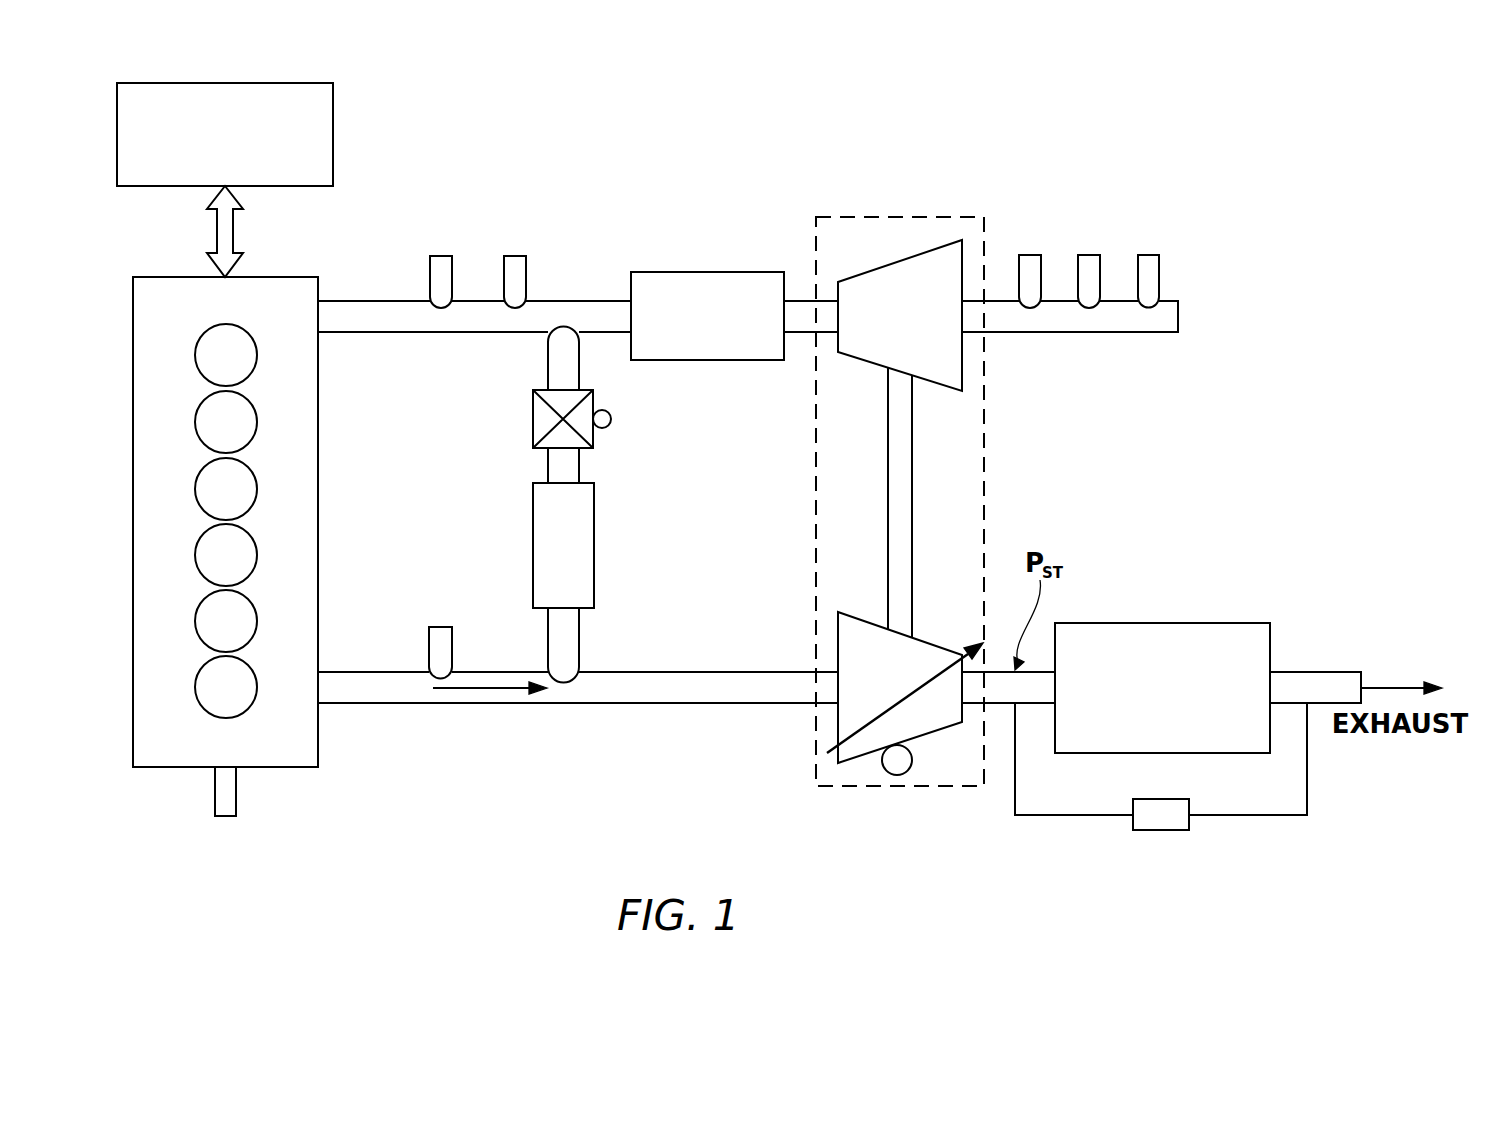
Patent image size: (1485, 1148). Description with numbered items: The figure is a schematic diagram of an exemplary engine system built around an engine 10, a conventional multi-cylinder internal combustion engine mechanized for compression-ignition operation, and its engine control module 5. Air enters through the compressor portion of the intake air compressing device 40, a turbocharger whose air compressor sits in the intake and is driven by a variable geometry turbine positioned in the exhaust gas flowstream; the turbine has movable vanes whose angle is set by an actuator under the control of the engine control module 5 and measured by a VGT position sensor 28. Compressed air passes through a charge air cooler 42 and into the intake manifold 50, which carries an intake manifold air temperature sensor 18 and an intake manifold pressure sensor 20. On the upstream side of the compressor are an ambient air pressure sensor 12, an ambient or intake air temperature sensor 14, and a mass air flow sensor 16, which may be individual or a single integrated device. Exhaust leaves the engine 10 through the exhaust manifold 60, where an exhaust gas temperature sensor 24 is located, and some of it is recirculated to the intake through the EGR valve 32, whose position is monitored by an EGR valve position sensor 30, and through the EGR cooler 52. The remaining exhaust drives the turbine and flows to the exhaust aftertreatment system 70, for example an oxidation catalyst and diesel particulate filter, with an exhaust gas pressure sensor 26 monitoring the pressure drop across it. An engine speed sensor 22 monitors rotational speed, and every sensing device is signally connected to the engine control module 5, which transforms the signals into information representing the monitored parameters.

The engine control module 5 is at (322, 138).
The engine 10 is at (310, 287).
The ambient air pressure sensor 12 is at (1148, 262).
The ambient or intake air temperature sensor 14 is at (1090, 262).
The mass air flow sensor 16 is at (1033, 263).
The intake manifold air temperature sensor 18 is at (520, 270).
The intake manifold pressure sensor 20 is at (447, 270).
The engine speed sensor 22 is at (229, 798).
The exhaust gas temperature sensor 24 is at (442, 637).
The exhaust gas pressure sensor 26 is at (1157, 817).
The VGT position sensor 28 is at (895, 775).
The EGR valve position sensor 30 is at (612, 420).
The EGR valve 32 is at (540, 433).
The intake air compressing device 40 is at (890, 217).
The charge air cooler 42 is at (710, 283).
The intake manifold 50 is at (367, 320).
The EGR cooler 52 is at (582, 540).
The exhaust manifold 60 is at (630, 693).
The exhaust aftertreatment system 70 is at (1213, 632).